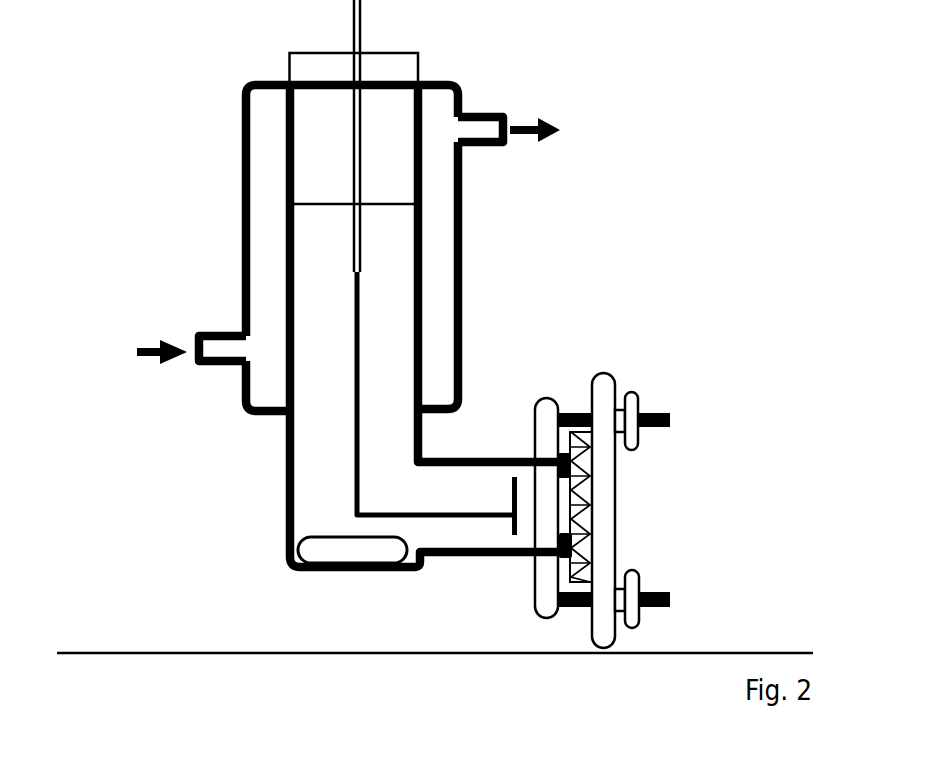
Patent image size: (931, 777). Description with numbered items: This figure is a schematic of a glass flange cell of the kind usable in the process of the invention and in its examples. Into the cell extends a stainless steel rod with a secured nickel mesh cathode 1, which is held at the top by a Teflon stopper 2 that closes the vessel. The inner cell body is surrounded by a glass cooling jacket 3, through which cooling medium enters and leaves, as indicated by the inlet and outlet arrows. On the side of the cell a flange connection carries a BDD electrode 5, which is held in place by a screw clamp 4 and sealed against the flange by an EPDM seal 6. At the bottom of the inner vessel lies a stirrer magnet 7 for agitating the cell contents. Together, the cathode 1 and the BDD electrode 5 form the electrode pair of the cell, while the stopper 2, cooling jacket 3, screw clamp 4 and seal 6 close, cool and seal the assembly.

The stainless steel rod with a secured nickel mesh cathode 1 is at (358, 17).
The Teflon stopper 2 is at (405, 67).
The cooling jacket 3 is at (270, 229).
The screw clamp 4 is at (603, 394).
The BDD electrode 5 is at (585, 502).
The EPDM seal 6 is at (572, 550).
The stirrer magnet 7 is at (315, 554).